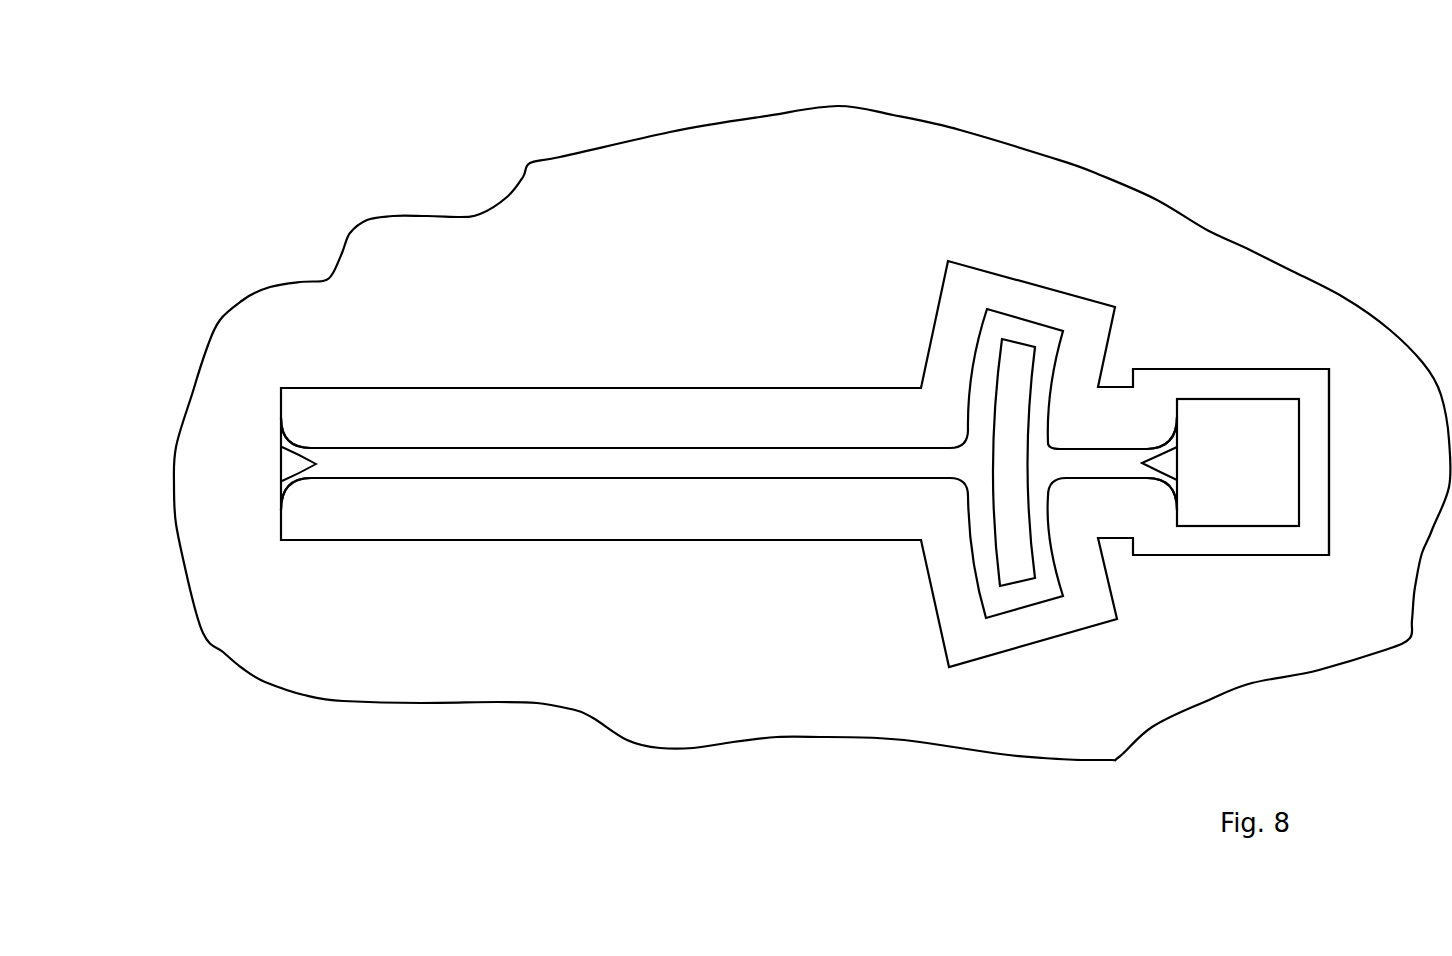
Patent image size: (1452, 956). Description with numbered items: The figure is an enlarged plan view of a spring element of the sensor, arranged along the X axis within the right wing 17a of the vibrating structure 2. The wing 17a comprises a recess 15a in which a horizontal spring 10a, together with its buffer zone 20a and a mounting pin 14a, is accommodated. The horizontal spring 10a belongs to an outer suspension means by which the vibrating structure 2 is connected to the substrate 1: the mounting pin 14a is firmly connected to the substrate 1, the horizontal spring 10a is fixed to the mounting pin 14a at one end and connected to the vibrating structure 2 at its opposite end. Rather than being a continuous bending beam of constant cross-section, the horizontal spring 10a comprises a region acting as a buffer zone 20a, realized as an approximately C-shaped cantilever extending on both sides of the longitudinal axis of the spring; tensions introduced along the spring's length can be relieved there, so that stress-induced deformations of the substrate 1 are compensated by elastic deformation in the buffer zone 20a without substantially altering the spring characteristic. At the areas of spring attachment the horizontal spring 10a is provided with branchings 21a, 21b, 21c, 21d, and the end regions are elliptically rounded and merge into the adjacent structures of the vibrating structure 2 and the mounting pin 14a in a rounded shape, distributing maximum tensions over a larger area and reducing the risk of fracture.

The substrate 1 is at (748, 454).
The vibrating structure 2 is at (812, 406).
The wing 17a is at (842, 177).
The horizontal spring 10a is at (518, 456).
The mounting pin 14a is at (1242, 470).
The recess 15a is at (1247, 380).
The buffer zone 20a is at (975, 522).
The branching 21a is at (300, 480).
The branching 21b is at (298, 447).
The branching 21c is at (1164, 495).
The branching 21d is at (1155, 445).